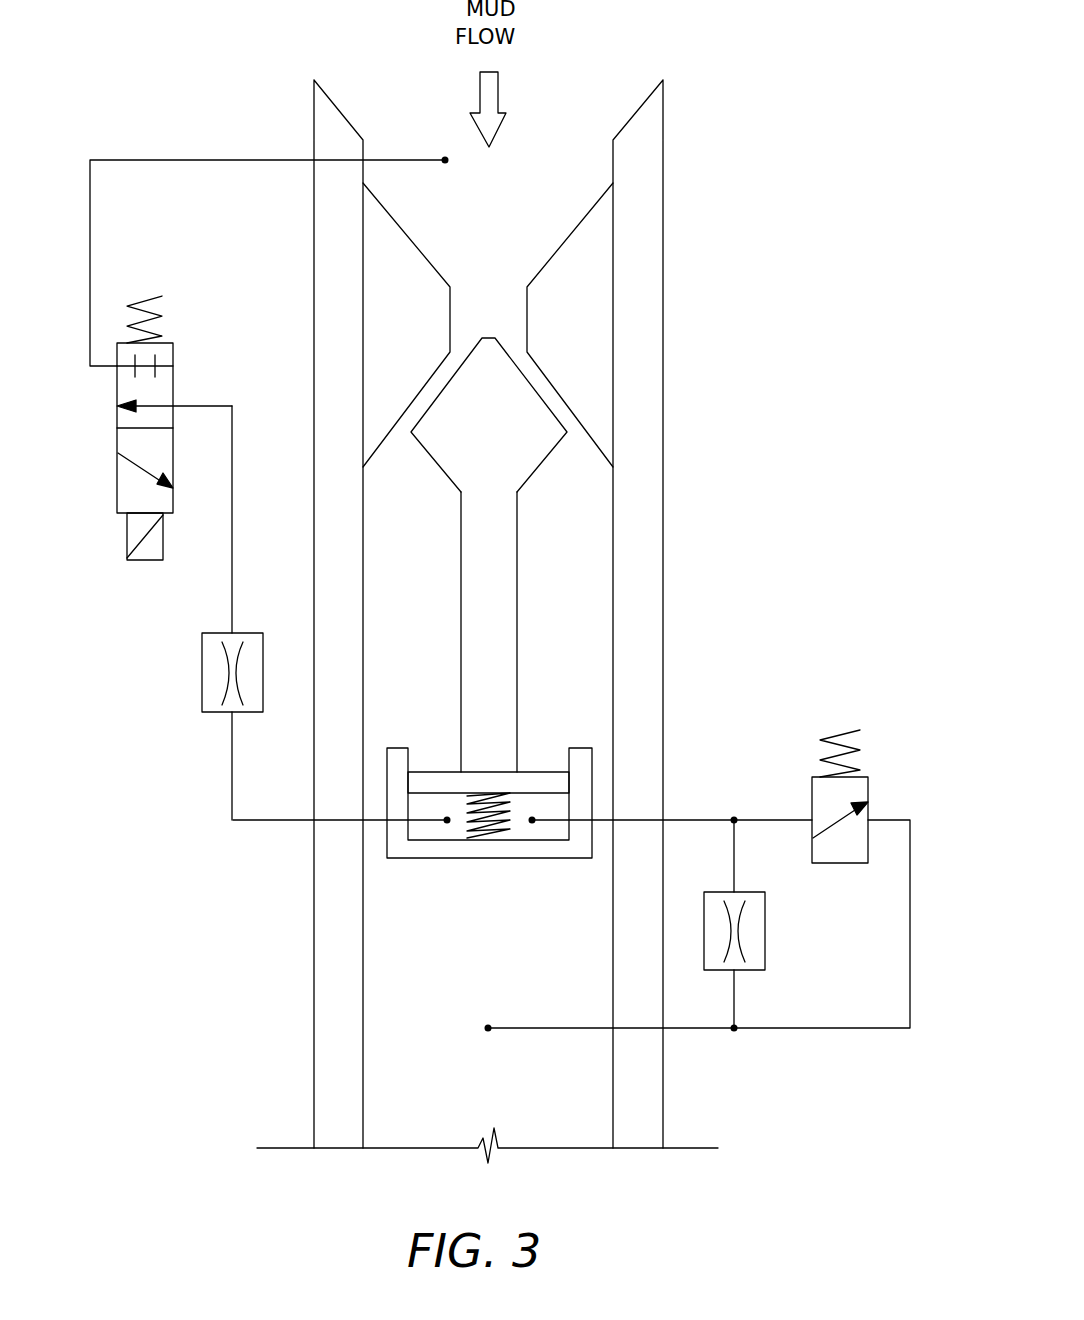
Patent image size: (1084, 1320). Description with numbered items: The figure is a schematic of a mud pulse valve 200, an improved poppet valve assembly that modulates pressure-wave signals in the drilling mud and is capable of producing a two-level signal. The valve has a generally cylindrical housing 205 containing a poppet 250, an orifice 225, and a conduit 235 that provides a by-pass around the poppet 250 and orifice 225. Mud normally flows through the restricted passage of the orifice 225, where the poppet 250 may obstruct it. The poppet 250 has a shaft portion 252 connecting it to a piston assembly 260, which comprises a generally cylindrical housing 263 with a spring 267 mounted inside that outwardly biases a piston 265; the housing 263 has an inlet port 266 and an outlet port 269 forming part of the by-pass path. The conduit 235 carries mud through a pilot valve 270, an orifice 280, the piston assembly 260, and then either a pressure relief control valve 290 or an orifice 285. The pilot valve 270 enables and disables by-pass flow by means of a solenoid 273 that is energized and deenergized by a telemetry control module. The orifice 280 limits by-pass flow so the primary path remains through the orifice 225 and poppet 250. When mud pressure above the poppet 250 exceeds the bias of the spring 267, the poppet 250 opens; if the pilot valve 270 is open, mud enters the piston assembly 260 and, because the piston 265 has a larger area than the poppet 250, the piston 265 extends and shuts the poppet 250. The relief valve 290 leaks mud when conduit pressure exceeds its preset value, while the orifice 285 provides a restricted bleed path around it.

The mud pulse valve 200 is at (252, 58).
The housing 205 is at (314, 232).
The orifice 225 is at (580, 221).
The conduit 235 is at (232, 747).
The poppet 250 is at (538, 443).
The shaft portion 252 is at (505, 606).
The piston assembly 260 is at (425, 858).
The housing 263 is at (387, 788).
The piston 265 is at (433, 777).
The inlet port 266 is at (387, 820).
The spring 267 is at (498, 832).
The outlet port 269 is at (592, 820).
The pilot valve 270 is at (173, 355).
The solenoid 273 is at (143, 560).
The orifice 280 is at (202, 673).
The orifice 285 is at (765, 922).
The pressure relief control valve 290 is at (812, 790).